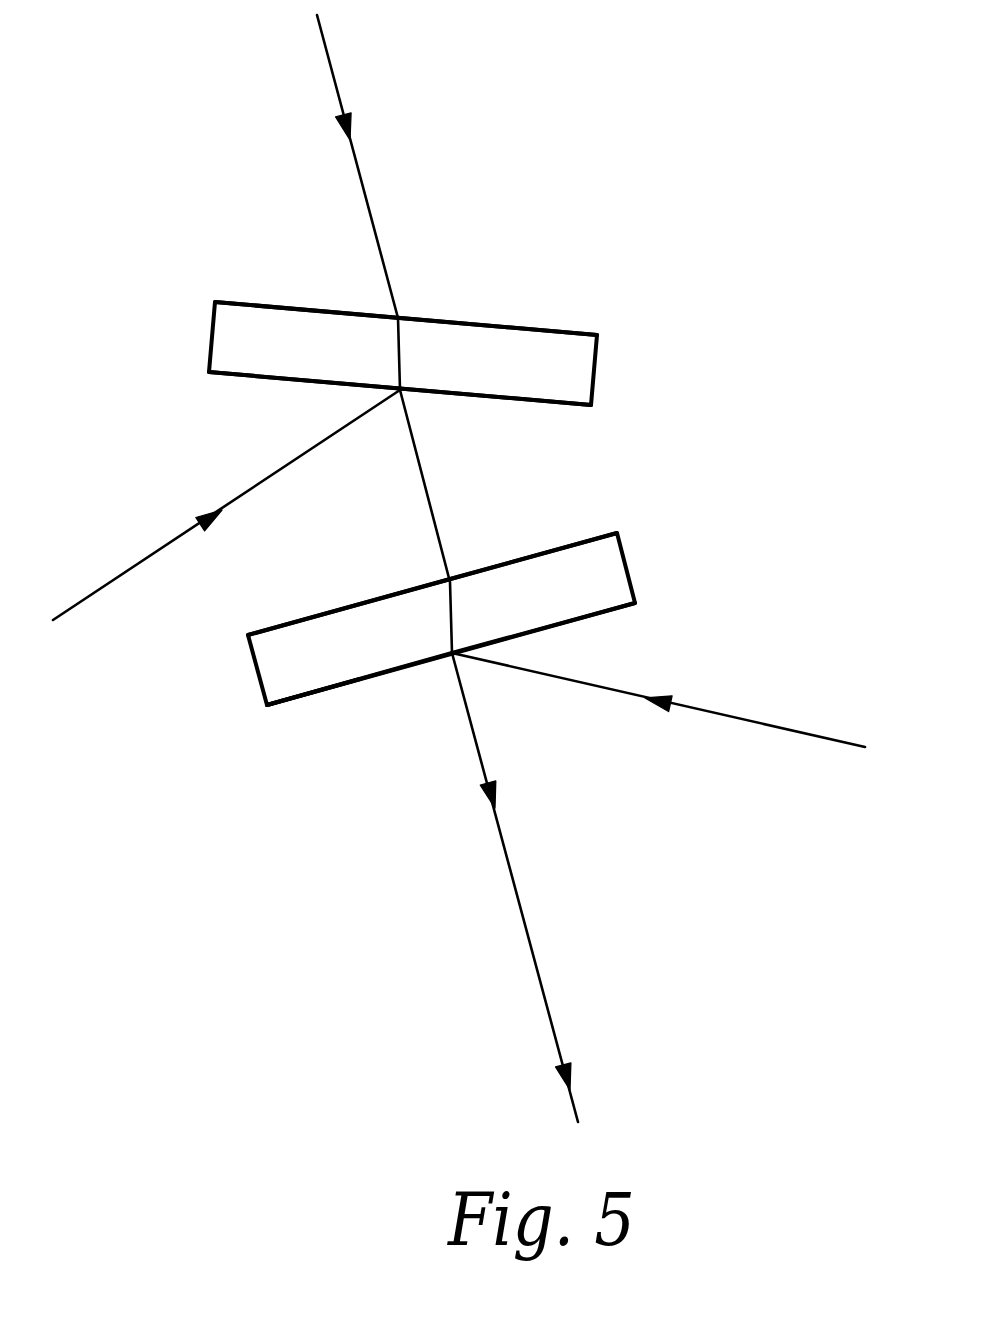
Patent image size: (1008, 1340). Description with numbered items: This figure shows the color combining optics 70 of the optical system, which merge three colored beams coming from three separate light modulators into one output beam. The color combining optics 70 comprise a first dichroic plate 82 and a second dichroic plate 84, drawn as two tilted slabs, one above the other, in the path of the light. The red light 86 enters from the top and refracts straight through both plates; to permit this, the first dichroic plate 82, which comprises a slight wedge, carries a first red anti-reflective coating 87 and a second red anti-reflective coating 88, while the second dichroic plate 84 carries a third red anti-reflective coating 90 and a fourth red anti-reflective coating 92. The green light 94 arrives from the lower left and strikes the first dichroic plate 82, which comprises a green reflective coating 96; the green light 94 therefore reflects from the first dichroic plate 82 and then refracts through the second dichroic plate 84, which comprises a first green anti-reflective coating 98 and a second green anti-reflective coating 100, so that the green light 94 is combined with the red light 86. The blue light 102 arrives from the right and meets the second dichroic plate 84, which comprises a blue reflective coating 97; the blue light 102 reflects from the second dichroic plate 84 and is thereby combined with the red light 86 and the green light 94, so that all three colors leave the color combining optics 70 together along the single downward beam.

The color combining optics 70 is at (652, 186).
The first dichroic plate 82 is at (595, 373).
The second dichroic plate 84 is at (628, 567).
The red light 86 is at (333, 70).
The first red anti-reflective coating 87 is at (498, 323).
The second red anti-reflective coating 88 is at (530, 402).
The third red anti-reflective coating 90 is at (502, 567).
The fourth red anti-reflective coating 92 is at (587, 620).
The green light 94 is at (87, 605).
The green reflective coating 96 is at (243, 378).
The blue reflective coating 97 is at (375, 680).
The first green anti-reflective coating 98 is at (270, 630).
The second green anti-reflective coating 100 is at (297, 703).
The blue light 102 is at (815, 735).